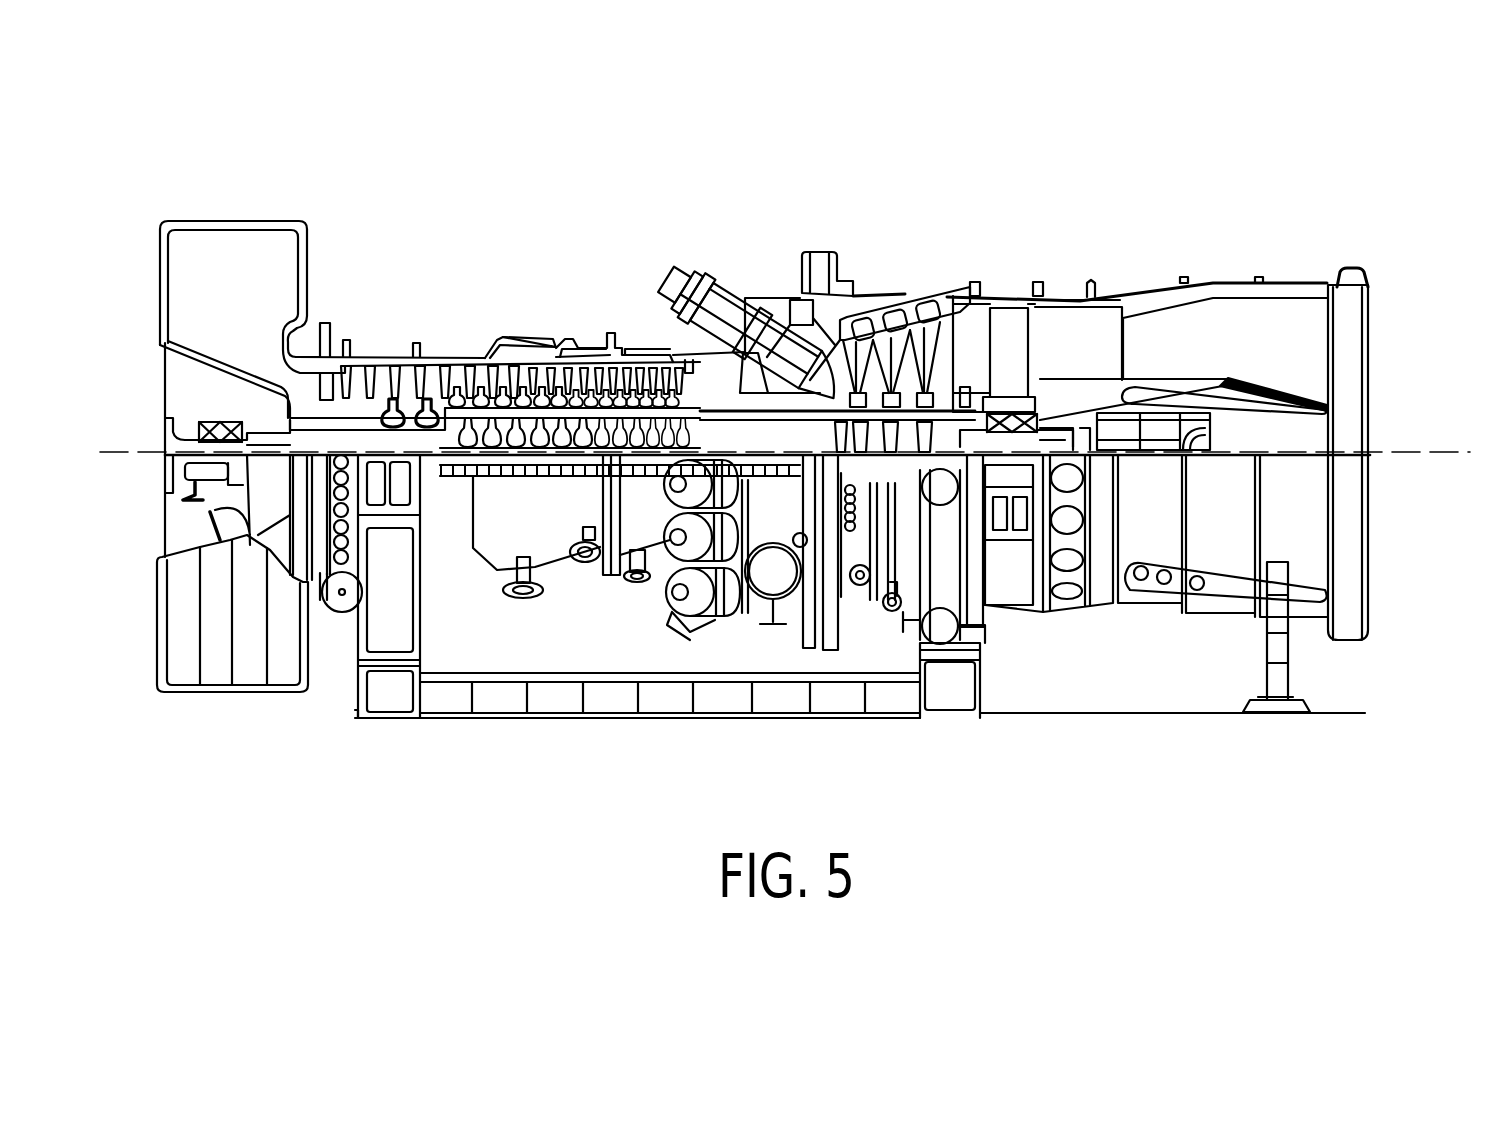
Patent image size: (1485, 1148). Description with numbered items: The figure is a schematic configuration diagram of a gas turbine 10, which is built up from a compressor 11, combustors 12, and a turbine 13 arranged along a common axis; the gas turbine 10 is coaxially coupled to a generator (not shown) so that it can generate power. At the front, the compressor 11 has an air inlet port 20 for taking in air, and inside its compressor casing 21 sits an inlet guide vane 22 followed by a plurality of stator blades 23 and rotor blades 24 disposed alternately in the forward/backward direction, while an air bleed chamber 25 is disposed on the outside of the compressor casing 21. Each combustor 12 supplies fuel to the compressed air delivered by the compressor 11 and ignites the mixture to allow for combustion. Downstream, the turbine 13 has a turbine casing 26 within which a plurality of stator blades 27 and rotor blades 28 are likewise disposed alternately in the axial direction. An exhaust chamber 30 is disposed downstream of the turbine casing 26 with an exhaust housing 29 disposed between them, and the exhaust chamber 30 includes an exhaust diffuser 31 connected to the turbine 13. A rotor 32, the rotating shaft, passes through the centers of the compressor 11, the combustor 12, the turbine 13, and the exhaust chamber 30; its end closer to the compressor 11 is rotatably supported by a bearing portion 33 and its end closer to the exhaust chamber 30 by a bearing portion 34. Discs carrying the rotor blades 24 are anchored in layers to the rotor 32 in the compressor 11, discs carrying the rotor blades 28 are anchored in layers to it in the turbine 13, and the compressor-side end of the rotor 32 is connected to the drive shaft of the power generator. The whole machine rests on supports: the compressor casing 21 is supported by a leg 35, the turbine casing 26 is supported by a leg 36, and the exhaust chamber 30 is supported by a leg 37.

The gas turbine 10 is at (785, 277).
The compressor 11 is at (487, 301).
The combustor 12 is at (731, 265).
The turbine 13 is at (1013, 304).
The air inlet port 20 is at (222, 389).
The compressor casing 21 is at (520, 312).
The inlet guide vane 22 is at (337, 297).
The stator blade 23 is at (517, 327).
The rotor blade 24 is at (500, 354).
The air bleed chamber 25 is at (579, 324).
The turbine casing 26 is at (837, 304).
The stator blade 27 is at (905, 276).
The rotor blade 28 is at (816, 245).
The exhaust housing 29 is at (1022, 334).
The exhaust chamber 30 is at (1204, 430).
The exhaust diffuser 31 is at (1064, 300).
The rotor 32 is at (690, 333).
The bearing portion 33 is at (195, 428).
The bearing portion 34 is at (1252, 377).
The leg 35 is at (349, 593).
The leg 36 is at (985, 624).
The leg 37 is at (1303, 637).